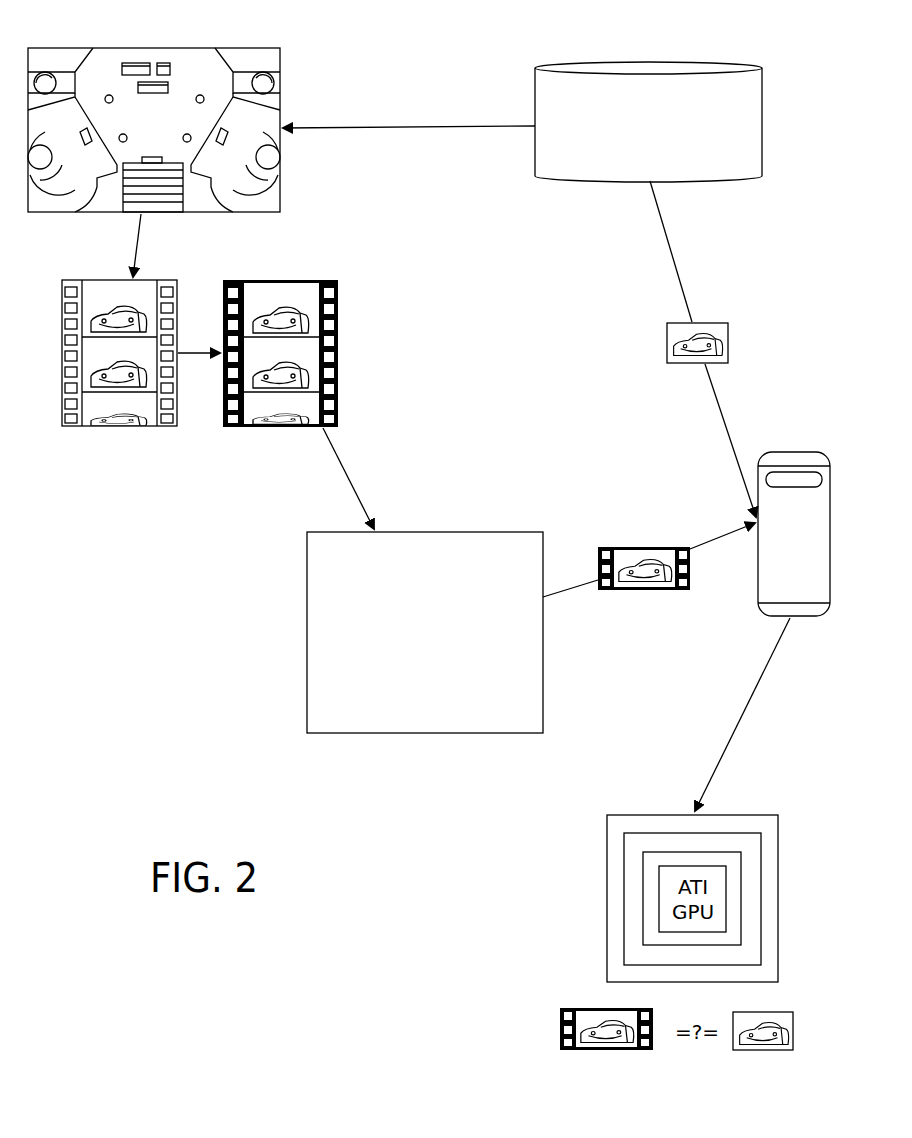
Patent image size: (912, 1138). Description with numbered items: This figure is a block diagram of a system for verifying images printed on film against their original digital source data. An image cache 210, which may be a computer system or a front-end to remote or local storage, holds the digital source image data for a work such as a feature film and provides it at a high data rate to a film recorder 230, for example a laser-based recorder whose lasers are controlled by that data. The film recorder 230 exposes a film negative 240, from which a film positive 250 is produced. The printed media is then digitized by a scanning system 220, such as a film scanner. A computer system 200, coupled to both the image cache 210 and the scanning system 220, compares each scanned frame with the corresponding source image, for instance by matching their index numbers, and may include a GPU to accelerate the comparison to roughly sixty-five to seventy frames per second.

The computer system 200 is at (830, 500).
The image cache 210 is at (762, 100).
The scanning system 220 is at (543, 558).
The film recorder 230 is at (280, 70).
The film negative 240 is at (177, 302).
The film positive 250 is at (338, 302).